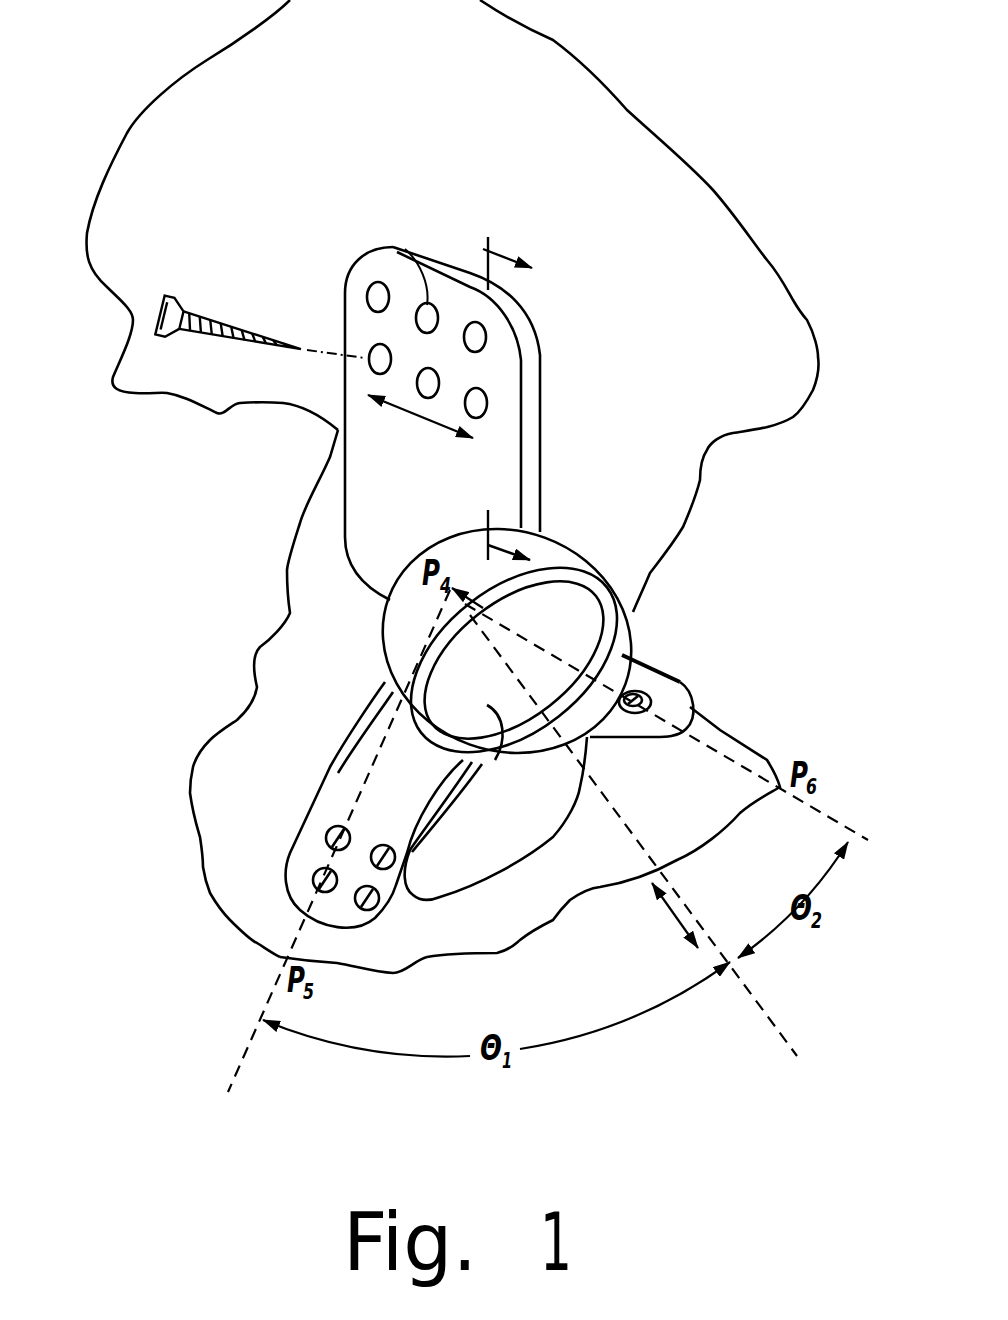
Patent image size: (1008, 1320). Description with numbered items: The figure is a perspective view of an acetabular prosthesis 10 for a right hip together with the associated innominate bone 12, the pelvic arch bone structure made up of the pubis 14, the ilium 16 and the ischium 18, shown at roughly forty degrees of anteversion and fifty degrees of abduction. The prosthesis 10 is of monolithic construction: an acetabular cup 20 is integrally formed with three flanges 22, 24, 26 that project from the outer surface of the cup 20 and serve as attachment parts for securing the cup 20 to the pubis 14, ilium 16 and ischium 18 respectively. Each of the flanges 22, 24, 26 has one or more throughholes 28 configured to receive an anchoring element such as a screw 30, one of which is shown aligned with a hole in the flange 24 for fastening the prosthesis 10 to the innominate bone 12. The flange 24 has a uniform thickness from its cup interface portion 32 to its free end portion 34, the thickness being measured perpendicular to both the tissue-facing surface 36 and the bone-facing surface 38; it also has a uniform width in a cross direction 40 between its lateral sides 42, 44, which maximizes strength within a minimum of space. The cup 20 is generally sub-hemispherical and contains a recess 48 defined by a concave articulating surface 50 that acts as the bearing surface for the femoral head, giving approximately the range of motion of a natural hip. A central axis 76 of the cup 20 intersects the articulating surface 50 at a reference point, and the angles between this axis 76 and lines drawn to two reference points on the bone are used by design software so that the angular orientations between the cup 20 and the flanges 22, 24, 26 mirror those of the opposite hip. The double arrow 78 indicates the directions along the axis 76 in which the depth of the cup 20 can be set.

The acetabular prosthesis 10 is at (282, 473).
The innominate bone 12 is at (648, 108).
The pubis 14 is at (683, 796).
The ilium 16 is at (412, 82).
The ischium 18 is at (241, 806).
The acetabular cup 20 is at (402, 640).
The flange 22 is at (632, 672).
The flange 24 is at (360, 535).
The flange 26 is at (343, 787).
The throughholes 28 is at (385, 292).
The screw 30 is at (218, 345).
The cup interface portion 32 is at (436, 532).
The free end portion 34 is at (443, 293).
The tissue-facing surface 36 is at (357, 463).
The bone-facing surface 38 is at (542, 400).
The cross direction 40 is at (422, 420).
The lateral side 42 is at (345, 308).
The lateral side 44 is at (530, 437).
The recess 48 is at (495, 762).
The articulating surface 50 is at (577, 612).
The central axis 76 is at (773, 1022).
The double arrow 78 is at (670, 917).